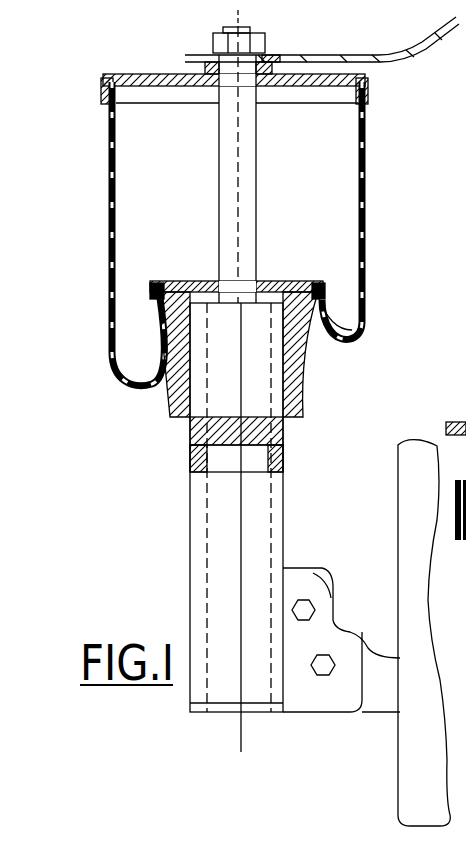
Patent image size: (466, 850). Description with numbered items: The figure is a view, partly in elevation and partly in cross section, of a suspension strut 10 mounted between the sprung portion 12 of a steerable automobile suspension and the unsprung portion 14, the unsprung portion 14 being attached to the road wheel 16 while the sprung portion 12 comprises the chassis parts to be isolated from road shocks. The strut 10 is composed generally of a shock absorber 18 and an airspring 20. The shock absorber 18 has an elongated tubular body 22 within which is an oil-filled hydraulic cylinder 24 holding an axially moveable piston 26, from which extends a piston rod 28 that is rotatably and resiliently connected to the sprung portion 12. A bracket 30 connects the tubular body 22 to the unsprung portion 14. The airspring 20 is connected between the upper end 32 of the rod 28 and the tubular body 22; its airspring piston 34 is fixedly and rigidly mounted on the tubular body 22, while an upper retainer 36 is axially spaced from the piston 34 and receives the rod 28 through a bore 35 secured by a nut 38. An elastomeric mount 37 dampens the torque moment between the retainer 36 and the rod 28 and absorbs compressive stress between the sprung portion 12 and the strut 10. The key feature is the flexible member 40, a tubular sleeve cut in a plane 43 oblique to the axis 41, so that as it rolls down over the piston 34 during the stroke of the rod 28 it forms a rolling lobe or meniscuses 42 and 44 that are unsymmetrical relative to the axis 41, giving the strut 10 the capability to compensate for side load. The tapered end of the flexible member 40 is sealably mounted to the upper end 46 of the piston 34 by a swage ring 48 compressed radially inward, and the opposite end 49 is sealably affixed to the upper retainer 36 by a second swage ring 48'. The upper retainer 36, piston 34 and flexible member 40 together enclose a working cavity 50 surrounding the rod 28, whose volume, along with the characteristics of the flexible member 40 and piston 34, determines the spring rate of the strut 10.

The suspension strut 10 is at (326, 38).
The sprung portion 12 is at (396, 52).
The unsprung portion 14 is at (367, 712).
The road wheel 16 is at (437, 440).
The shock absorber 18 is at (292, 494).
The airspring 20 is at (367, 190).
The elongated tubular body 22 is at (283, 446).
The hydraulic cylinder 24 is at (192, 457).
The piston 26 is at (192, 430).
The piston rod 28 is at (262, 188).
The bracket 30 is at (322, 568).
The upper end of the rod 32 is at (226, 86).
The airspring piston 34 is at (300, 372).
The bore 35 is at (268, 88).
The upper retainer 36 is at (160, 72).
The elastomeric mount 37 is at (286, 52).
The nut 38 is at (215, 48).
The flexible member 40 is at (370, 267).
The axis 41 is at (241, 740).
The meniscus 42 is at (345, 318).
The cutting plane 43 is at (200, 380).
The meniscus 44 is at (133, 366).
The upper end of the piston 46 is at (296, 286).
The swage ring 48 is at (237, 268).
The swage ring 48' is at (398, 103).
The opposite end of the flexible member 49 is at (108, 122).
The working cavity 50 is at (312, 215).